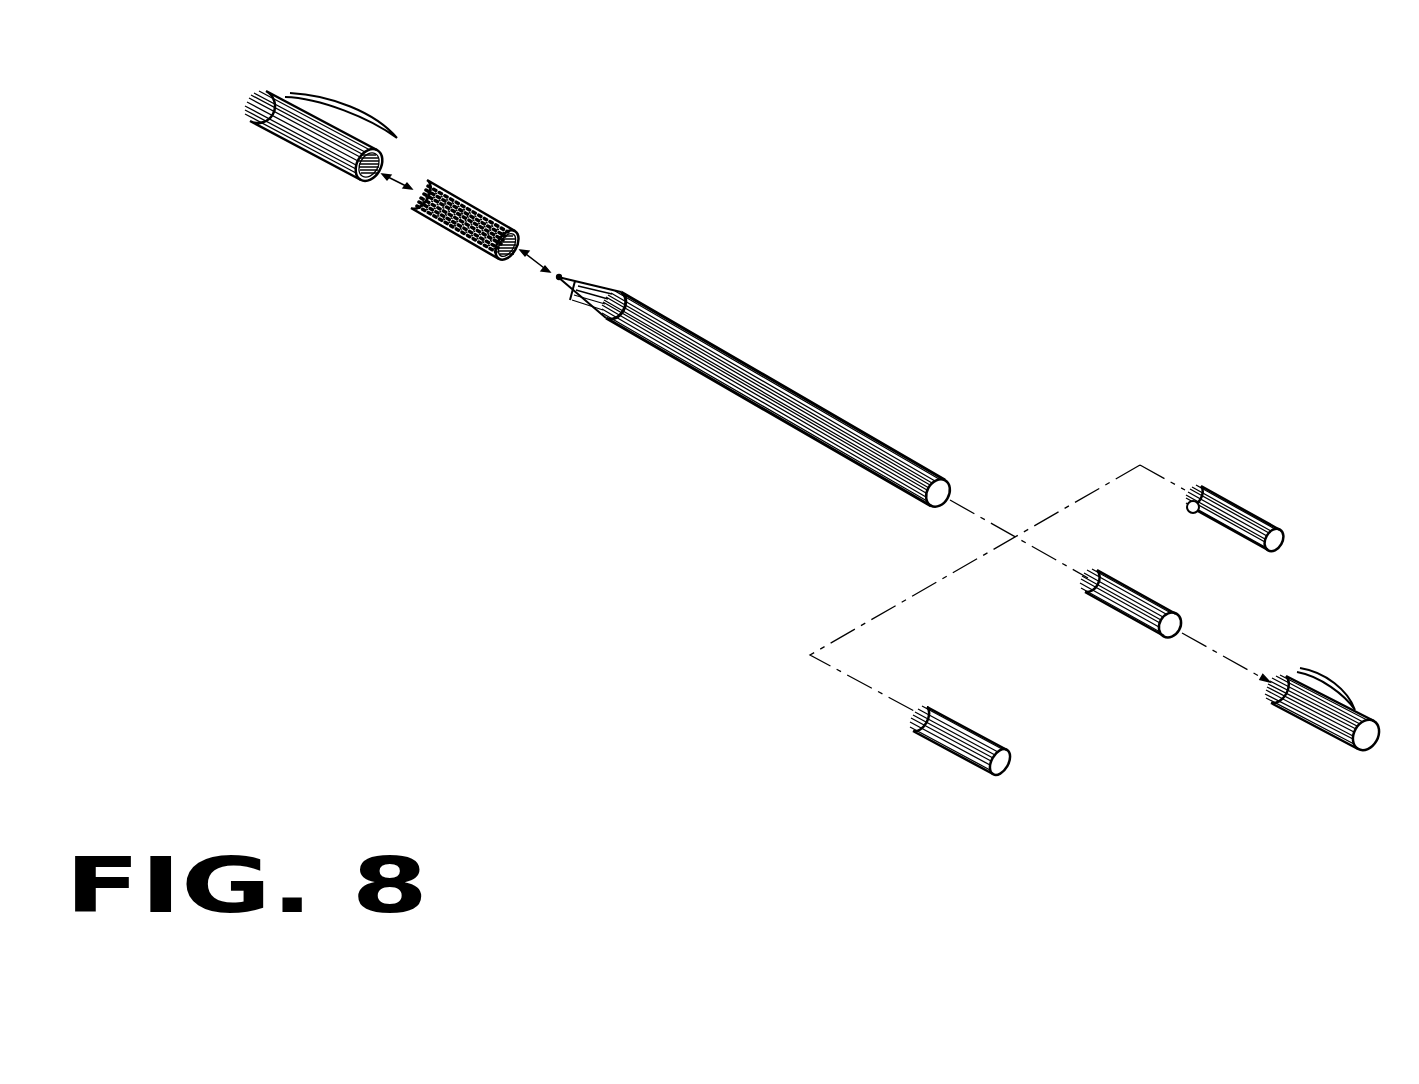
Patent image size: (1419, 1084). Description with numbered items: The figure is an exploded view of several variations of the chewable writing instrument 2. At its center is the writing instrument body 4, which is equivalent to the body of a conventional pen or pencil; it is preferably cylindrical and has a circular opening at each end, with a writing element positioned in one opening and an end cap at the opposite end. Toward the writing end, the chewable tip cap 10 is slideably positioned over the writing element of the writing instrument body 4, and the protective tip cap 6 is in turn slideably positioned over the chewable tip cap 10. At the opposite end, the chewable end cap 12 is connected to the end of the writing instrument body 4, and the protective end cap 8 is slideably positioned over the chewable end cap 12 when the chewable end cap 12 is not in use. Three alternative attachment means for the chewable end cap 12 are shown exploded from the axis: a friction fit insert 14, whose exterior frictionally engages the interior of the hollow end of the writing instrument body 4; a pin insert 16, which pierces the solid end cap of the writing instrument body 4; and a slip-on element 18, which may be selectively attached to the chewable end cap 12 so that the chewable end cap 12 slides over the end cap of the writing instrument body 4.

The chewable writing instrument 2 is at (1002, 305).
The writing instrument body 4 is at (787, 385).
The protective tip cap 6 is at (287, 145).
The protective end cap 8 is at (1307, 725).
The chewable tip cap 10 is at (452, 234).
The chewable end cap 12 is at (1010, 748).
The friction fit insert 14 is at (923, 713).
The pin insert 16 is at (1088, 583).
The slip-on element 18 is at (1193, 487).